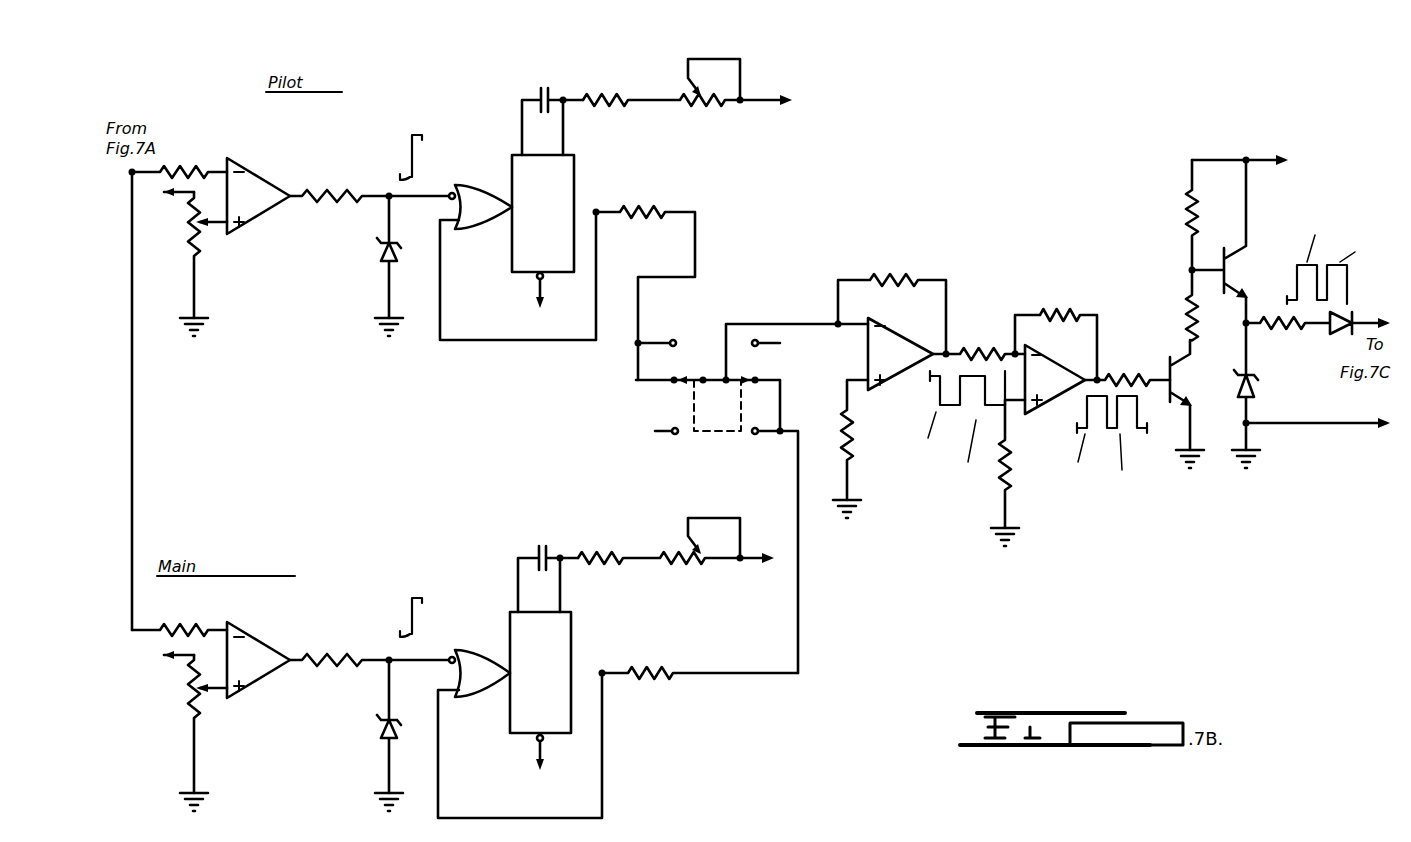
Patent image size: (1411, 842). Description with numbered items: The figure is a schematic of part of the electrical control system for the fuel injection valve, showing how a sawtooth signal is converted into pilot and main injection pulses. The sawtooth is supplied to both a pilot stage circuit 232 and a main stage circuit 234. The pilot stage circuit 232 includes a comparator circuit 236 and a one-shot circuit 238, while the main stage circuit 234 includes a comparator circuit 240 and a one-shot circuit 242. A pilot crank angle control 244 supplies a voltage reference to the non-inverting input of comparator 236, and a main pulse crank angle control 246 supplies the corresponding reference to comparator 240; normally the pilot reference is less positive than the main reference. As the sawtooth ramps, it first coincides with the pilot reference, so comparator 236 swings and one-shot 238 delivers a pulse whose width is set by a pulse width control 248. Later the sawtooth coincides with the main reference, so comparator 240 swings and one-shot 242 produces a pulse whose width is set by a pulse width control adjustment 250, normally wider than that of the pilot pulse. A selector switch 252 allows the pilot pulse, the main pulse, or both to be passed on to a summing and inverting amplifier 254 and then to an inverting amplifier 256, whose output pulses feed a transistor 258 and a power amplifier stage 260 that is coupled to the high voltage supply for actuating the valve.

The pilot stage circuit 232 is at (440, 102).
The main stage circuit 234 is at (378, 536).
The comparator circuit 236 is at (262, 162).
The one-shot circuit 238 is at (580, 190).
The comparator circuit 240 is at (255, 683).
The one-shot circuit 242 is at (476, 614).
The pilot crank angle control 244 is at (208, 232).
The main pulse crank angle control 246 is at (208, 703).
The pulse width control 248 is at (703, 112).
The pulse width control adjustment 250 is at (667, 543).
The selector switch 252 is at (656, 403).
The summing and inverting amplifier 254 is at (893, 255).
The inverting amplifier 256 is at (1056, 300).
The transistor 258 is at (1172, 350).
The power amplifier stage 260 is at (1250, 265).